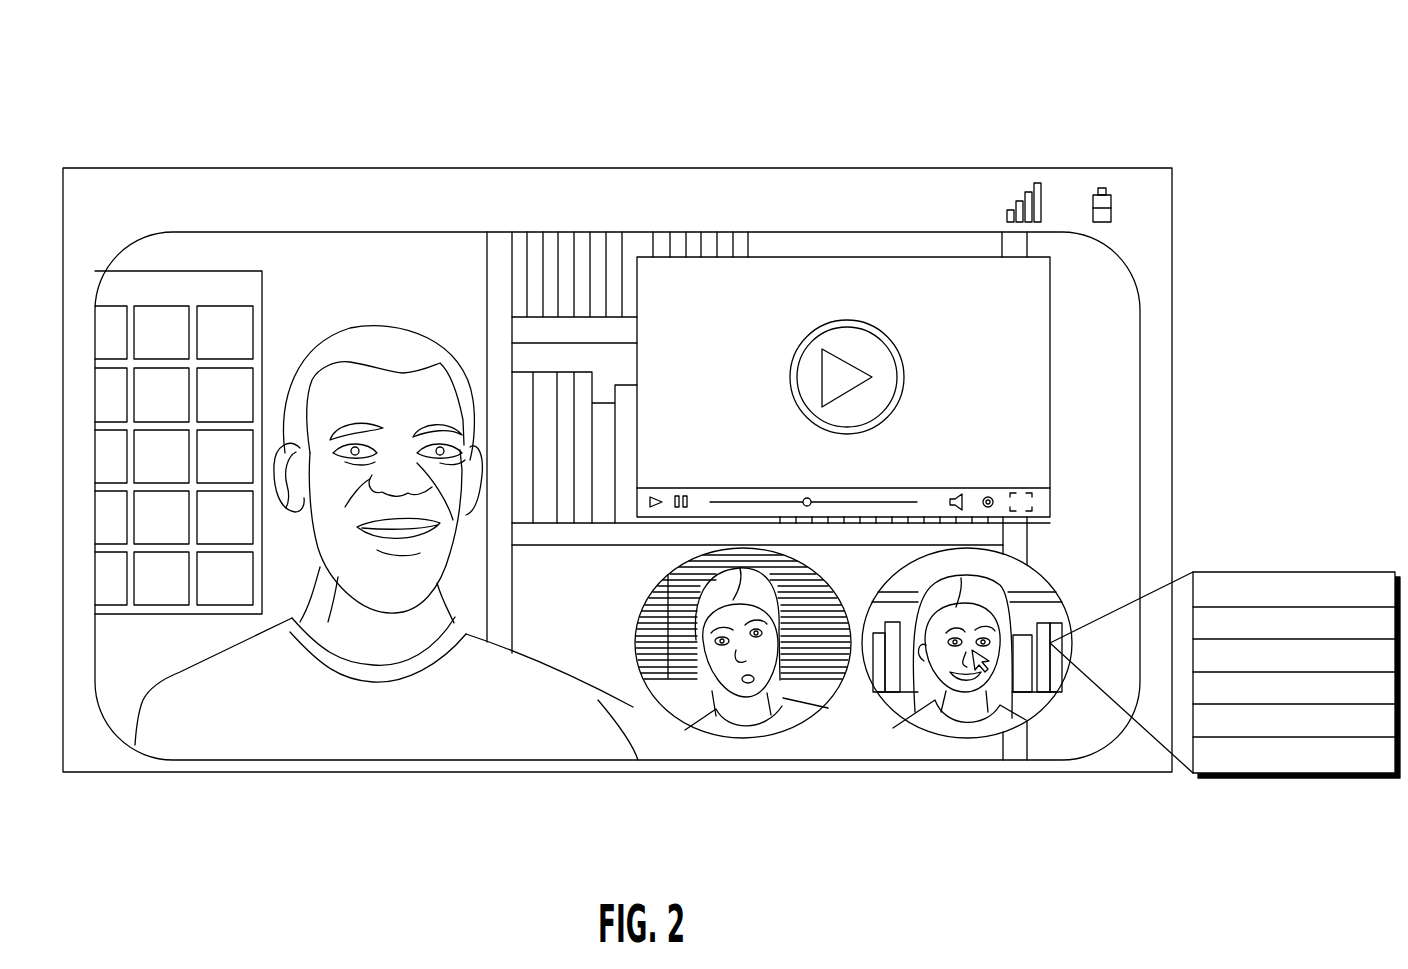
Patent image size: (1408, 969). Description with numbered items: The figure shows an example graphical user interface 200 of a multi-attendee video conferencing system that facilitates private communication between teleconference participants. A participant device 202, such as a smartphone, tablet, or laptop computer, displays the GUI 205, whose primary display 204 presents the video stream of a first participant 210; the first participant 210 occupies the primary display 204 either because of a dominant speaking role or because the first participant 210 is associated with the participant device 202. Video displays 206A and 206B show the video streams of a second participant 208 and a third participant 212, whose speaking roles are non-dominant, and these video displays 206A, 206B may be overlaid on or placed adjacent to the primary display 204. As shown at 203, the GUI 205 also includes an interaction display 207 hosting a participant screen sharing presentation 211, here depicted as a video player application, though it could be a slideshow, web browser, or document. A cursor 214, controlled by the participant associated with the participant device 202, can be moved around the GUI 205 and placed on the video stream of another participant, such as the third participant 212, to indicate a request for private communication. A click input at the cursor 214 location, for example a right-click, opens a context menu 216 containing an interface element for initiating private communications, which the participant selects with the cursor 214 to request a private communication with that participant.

The graphical user interface 200 is at (310, 123).
The participant device 202 is at (873, 168).
The GUI depiction with interaction display 203 is at (96, 122).
The primary display 204 is at (117, 258).
The GUI 205 is at (380, 253).
The video display 206A is at (651, 706).
The video display 206B is at (983, 740).
The interaction display 207 is at (800, 257).
The second participant 208 is at (720, 692).
The first participant 210 is at (323, 572).
The participant screen sharing presentation 211 is at (1050, 392).
The third participant 212 is at (915, 693).
The cursor 214 is at (975, 658).
The context menu 216 is at (1263, 572).